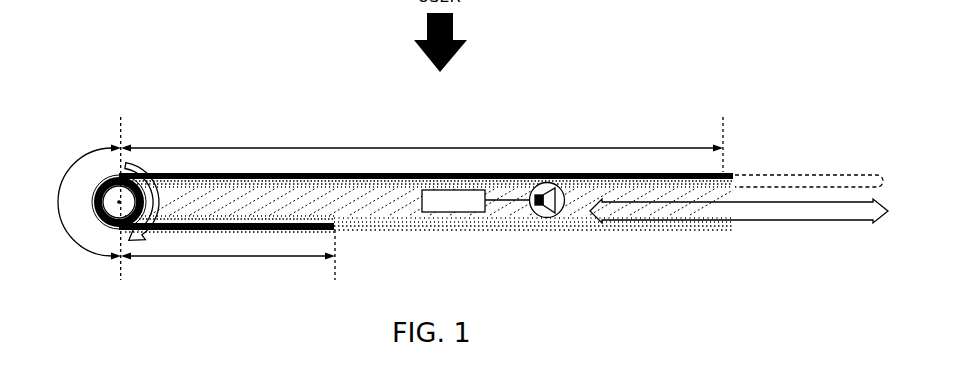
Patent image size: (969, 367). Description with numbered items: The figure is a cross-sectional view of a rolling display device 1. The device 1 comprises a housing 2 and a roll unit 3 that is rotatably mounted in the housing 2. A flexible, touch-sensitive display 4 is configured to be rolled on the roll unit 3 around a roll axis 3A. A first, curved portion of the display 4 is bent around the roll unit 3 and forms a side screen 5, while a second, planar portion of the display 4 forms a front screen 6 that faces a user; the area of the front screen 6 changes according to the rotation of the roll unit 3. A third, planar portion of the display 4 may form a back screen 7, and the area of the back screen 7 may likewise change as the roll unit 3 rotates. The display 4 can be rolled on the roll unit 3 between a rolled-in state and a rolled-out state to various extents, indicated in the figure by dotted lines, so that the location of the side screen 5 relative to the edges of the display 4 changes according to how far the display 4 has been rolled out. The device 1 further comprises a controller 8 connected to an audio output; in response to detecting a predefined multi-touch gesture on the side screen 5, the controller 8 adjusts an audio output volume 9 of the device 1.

The rolling display device 1 is at (198, 107).
The housing 2 is at (582, 213).
The roll unit 3 is at (107, 178).
The roll axis 3A is at (118, 202).
The flexible, touch-sensitive display 4 is at (448, 175).
The side screen 5 is at (97, 202).
The front screen 6 is at (422, 137).
The back screen 7 is at (228, 268).
The controller 8 is at (453, 212).
The audio output volume 9 is at (545, 216).